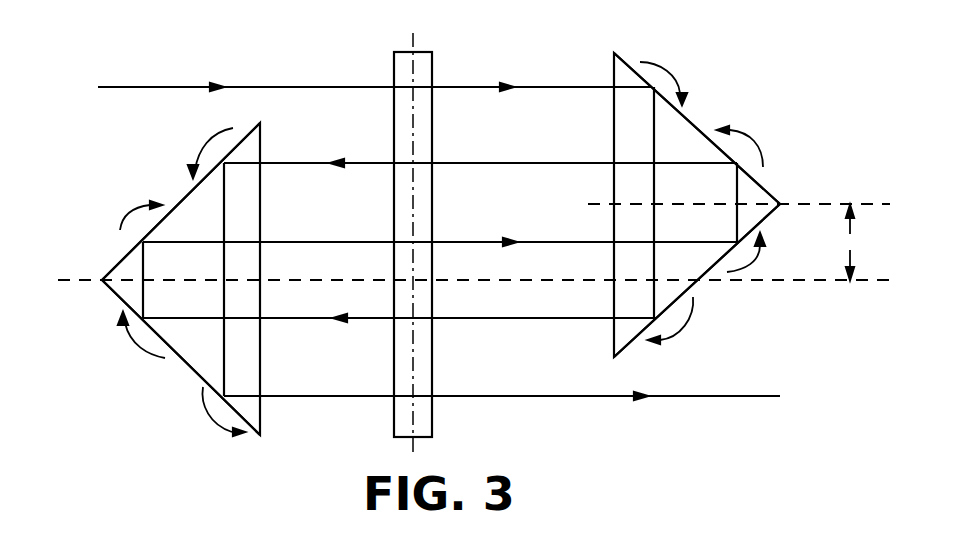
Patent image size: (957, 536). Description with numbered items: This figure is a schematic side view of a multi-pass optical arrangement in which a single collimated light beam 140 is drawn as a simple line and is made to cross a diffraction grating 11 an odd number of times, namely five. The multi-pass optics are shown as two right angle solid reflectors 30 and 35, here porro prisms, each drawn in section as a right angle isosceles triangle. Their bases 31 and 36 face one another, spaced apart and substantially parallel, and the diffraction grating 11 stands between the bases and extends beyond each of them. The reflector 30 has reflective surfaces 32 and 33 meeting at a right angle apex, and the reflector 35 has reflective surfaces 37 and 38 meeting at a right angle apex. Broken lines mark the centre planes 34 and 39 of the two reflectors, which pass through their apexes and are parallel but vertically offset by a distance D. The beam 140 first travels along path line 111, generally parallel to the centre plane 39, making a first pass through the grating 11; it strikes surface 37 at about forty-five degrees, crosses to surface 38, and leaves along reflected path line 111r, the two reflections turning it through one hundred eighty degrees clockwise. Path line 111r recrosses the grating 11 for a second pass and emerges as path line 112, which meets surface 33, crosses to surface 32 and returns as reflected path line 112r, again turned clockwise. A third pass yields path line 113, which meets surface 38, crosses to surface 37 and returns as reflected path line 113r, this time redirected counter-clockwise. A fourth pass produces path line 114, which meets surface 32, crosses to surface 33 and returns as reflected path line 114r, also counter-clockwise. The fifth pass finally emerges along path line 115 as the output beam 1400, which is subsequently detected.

The diffraction grating 11 is at (435, 420).
The right angle solid reflector 30 is at (247, 130).
The base of reflector 31 is at (250, 282).
The reflective surface 32 is at (180, 195).
The reflective surface 33 is at (190, 372).
The centre plane 34 is at (850, 280).
The right angle solid reflector 35 is at (632, 73).
The base of reflector 36 is at (617, 237).
The reflective surface 37 is at (693, 118).
The reflective surface 38 is at (693, 285).
The centre plane 39 is at (850, 204).
The distance D is at (855, 245).
The collimated light beam 140 is at (312, 87).
The output beam 1400 is at (740, 396).
The path line 111 is at (455, 85).
The reflected path line 111r is at (455, 316).
The path line 112 is at (372, 316).
The reflected path line 112r is at (372, 240).
The path line 113 is at (455, 240).
The reflected path line 113r is at (455, 160).
The path line 114 is at (371, 160).
The reflected path line 114r is at (375, 394).
The path line 115 is at (455, 394).